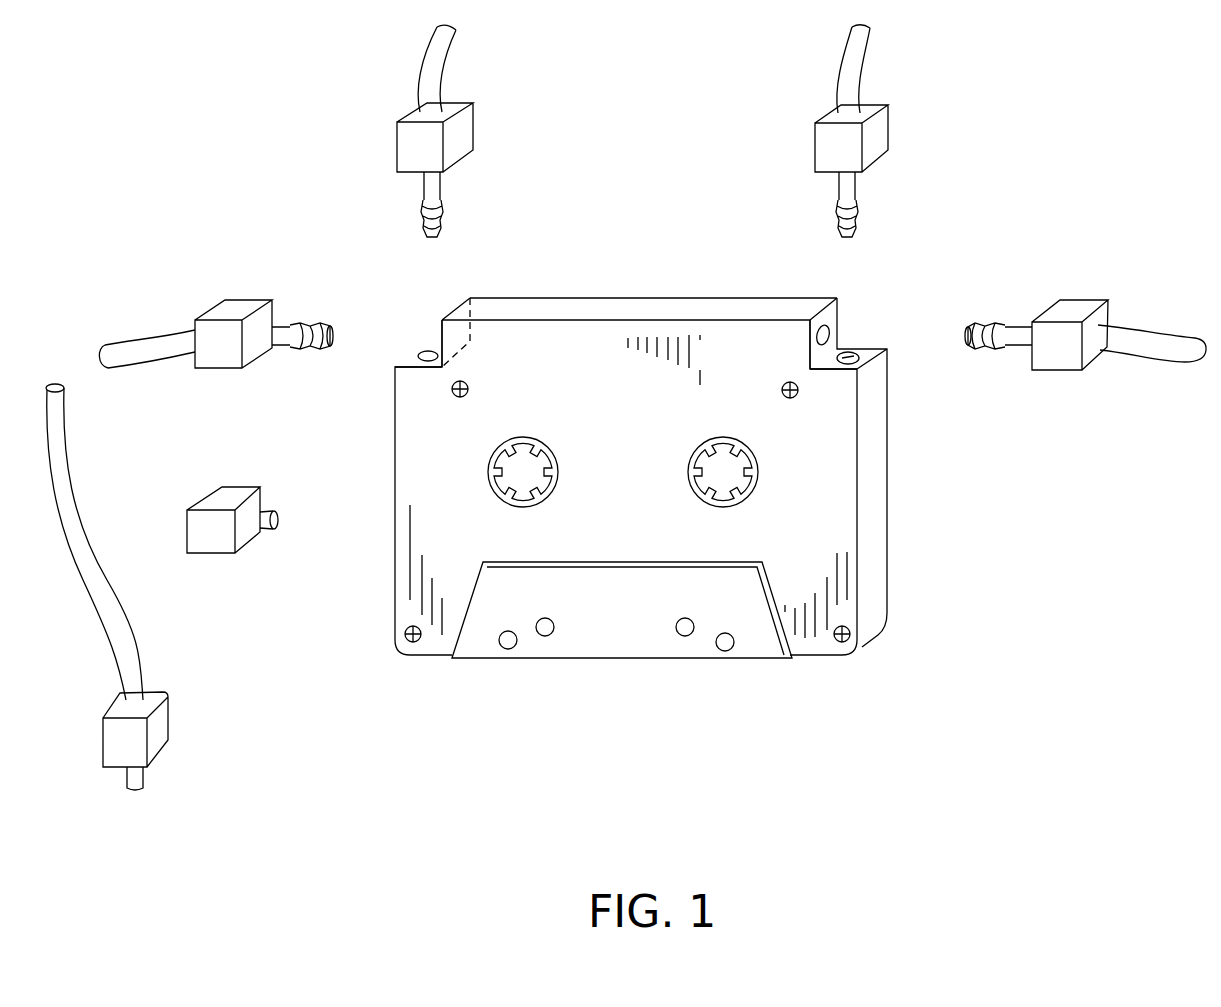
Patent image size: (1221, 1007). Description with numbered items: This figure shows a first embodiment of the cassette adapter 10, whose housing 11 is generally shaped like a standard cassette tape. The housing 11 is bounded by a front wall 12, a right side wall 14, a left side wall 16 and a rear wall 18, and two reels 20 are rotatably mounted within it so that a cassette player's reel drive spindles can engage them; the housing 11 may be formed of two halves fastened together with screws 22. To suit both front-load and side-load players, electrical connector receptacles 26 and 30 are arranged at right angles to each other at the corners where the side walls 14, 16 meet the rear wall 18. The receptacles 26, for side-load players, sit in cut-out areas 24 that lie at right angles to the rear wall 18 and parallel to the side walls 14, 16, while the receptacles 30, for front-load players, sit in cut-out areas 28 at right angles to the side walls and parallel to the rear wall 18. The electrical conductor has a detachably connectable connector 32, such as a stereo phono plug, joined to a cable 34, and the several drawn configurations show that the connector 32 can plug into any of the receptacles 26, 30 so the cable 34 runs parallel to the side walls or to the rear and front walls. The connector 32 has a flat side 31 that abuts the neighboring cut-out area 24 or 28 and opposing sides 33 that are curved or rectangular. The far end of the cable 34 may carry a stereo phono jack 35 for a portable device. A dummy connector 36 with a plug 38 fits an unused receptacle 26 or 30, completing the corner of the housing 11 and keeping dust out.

The adapter 10 is at (594, 716).
The housing 11 is at (813, 532).
The front wall 12 is at (433, 657).
The right side wall 14 is at (873, 563).
The left side wall 16 is at (395, 535).
The rear wall 18 is at (715, 312).
The reels 20 is at (557, 450).
The screws 22 is at (468, 389).
The cut-out areas 24 is at (447, 320).
The receptacles 26 is at (825, 338).
The cut-out areas 28 is at (420, 357).
The receptacles 30 is at (428, 352).
The flat side 31 is at (458, 140).
The connector 32 is at (475, 122).
The opposing sides 33 is at (878, 143).
The cable 34 is at (447, 60).
The stereo phono jack 35 is at (165, 722).
The dummy connector 36 is at (187, 527).
The plug 38 is at (267, 510).